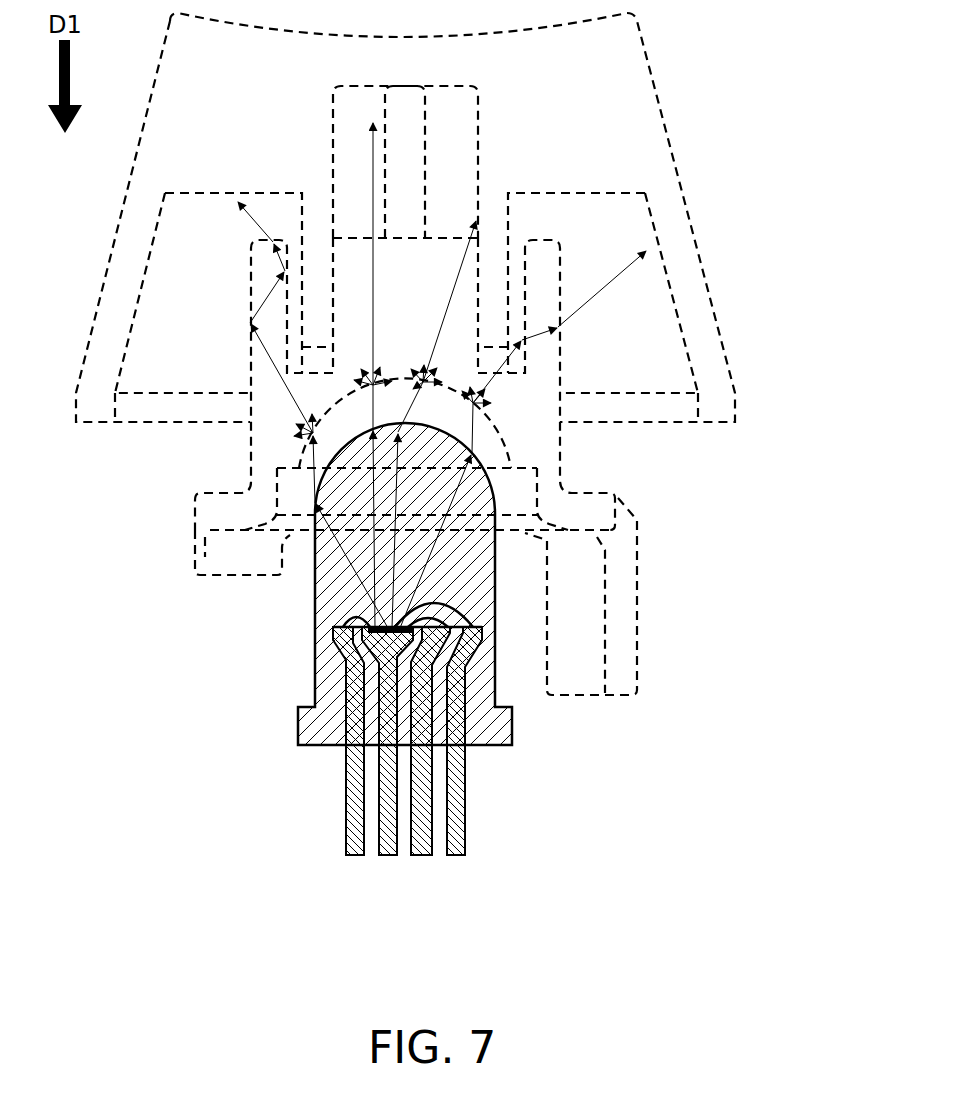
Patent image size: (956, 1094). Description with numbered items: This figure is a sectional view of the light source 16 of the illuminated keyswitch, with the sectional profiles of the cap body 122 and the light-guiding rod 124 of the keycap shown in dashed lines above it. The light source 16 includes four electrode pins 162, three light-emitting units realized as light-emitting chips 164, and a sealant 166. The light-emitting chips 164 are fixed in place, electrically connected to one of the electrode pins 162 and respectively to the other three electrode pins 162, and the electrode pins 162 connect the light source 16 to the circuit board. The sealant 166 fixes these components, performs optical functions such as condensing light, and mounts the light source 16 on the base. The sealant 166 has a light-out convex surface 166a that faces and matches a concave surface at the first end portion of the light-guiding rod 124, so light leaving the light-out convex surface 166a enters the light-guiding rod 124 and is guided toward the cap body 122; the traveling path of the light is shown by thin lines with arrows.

The light source 16 is at (332, 652).
The cap body 122 is at (655, 84).
The light-guiding rod 124 is at (562, 455).
The electrode pins 162 is at (455, 847).
The light-emitting chips 164 is at (345, 702).
The sealant 166 is at (323, 658).
The light-out convex surface 166a is at (333, 462).